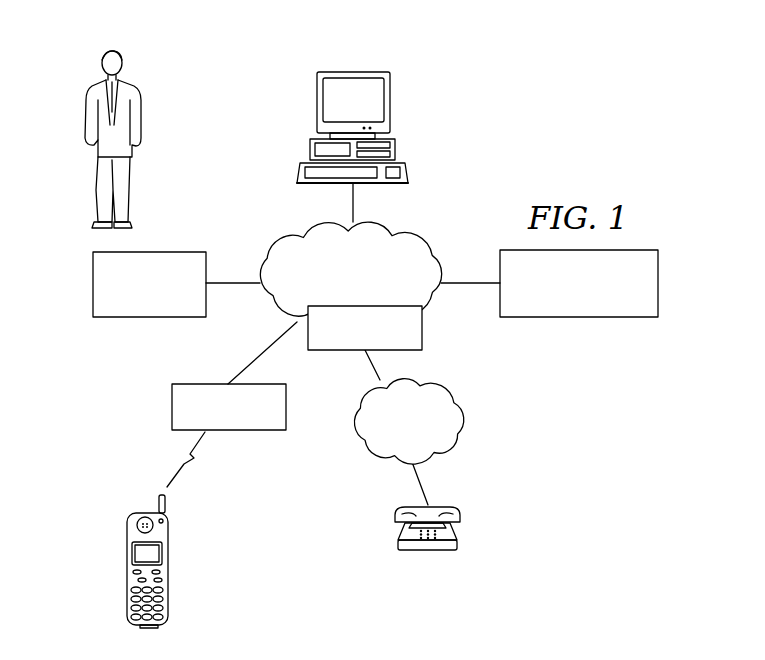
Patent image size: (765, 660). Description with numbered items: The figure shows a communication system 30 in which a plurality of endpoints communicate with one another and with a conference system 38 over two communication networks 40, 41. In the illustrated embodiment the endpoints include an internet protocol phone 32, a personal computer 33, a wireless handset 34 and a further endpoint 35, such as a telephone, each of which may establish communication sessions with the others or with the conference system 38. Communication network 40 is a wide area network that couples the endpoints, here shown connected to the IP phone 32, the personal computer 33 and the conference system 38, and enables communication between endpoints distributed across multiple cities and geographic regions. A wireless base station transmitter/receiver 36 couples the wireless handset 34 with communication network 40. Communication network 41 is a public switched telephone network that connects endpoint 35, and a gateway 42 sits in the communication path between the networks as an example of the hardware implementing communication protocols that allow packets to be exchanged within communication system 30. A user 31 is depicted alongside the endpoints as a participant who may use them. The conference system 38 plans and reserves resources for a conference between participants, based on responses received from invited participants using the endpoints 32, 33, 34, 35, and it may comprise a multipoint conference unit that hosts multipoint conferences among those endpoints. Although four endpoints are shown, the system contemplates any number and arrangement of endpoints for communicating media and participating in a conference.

The communication system 30 is at (188, 74).
The user 31 is at (88, 95).
The internet protocol (IP) phone 32 is at (148, 317).
The personal computer 33 is at (317, 100).
The wireless handset 34 is at (127, 582).
The endpoint 35 is at (457, 545).
The wireless base station transmitter/receiver 36 is at (172, 406).
The conference system 38 is at (578, 317).
The communication network 40 is at (413, 235).
The communication network 41 is at (464, 425).
The gateway 42 is at (422, 343).